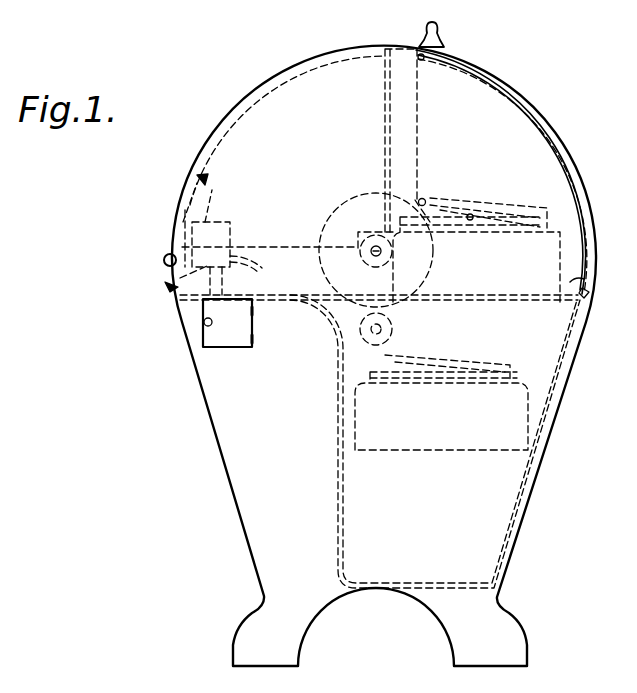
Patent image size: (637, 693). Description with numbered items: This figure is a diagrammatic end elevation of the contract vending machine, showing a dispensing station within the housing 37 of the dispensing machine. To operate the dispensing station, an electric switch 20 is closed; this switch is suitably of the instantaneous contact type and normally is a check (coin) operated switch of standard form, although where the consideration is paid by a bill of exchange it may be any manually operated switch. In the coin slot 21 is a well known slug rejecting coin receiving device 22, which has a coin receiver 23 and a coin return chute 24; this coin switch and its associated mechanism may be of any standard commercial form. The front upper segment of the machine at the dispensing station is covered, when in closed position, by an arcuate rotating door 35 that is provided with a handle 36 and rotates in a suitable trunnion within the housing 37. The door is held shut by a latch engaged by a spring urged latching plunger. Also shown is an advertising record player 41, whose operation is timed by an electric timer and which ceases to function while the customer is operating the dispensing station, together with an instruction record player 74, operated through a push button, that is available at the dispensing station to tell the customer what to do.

The electric switch 20 is at (197, 232).
The coin slot 21 is at (192, 192).
The slug rejecting coin receiving device 22 is at (163, 265).
The coin receiver 23 is at (203, 341).
The coin return chute 24 is at (173, 288).
The arcuate rotating door 35 is at (515, 92).
The handle 36 is at (441, 33).
The housing 37 is at (588, 286).
The advertising record player 41 is at (520, 272).
The instruction record player 74 is at (505, 420).